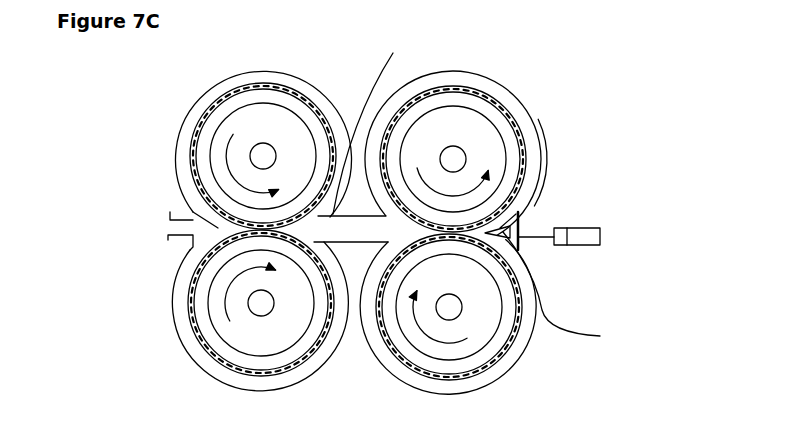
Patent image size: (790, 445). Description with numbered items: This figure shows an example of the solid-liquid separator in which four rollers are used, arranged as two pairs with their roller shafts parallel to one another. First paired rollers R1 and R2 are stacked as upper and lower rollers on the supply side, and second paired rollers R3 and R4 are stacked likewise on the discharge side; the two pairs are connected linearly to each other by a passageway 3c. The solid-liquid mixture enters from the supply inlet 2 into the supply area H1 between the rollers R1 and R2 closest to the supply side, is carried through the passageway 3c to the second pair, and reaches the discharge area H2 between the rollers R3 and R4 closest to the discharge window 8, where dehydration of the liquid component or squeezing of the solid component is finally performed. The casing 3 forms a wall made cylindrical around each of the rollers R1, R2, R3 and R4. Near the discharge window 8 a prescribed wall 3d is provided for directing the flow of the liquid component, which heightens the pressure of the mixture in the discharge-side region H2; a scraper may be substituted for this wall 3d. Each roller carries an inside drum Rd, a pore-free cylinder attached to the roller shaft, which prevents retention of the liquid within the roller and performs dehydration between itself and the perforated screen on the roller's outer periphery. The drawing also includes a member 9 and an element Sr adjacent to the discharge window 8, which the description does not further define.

The supply inlet 2 is at (168, 222).
The casing 3 is at (212, 87).
The passageway 3c is at (360, 137).
The prescribed wall 3d is at (569, 291).
The discharge window 8 is at (519, 250).
The stripper claw 9 is at (521, 226).
The roller R1 is at (300, 94).
The roller R2 is at (217, 357).
The roller R3 is at (508, 100).
The roller R4 is at (445, 378).
The inside drum Rd is at (213, 140).
The supply area H1 is at (193, 212).
The discharge area H2 is at (518, 214).
The sensor / spring Sr is at (592, 233).